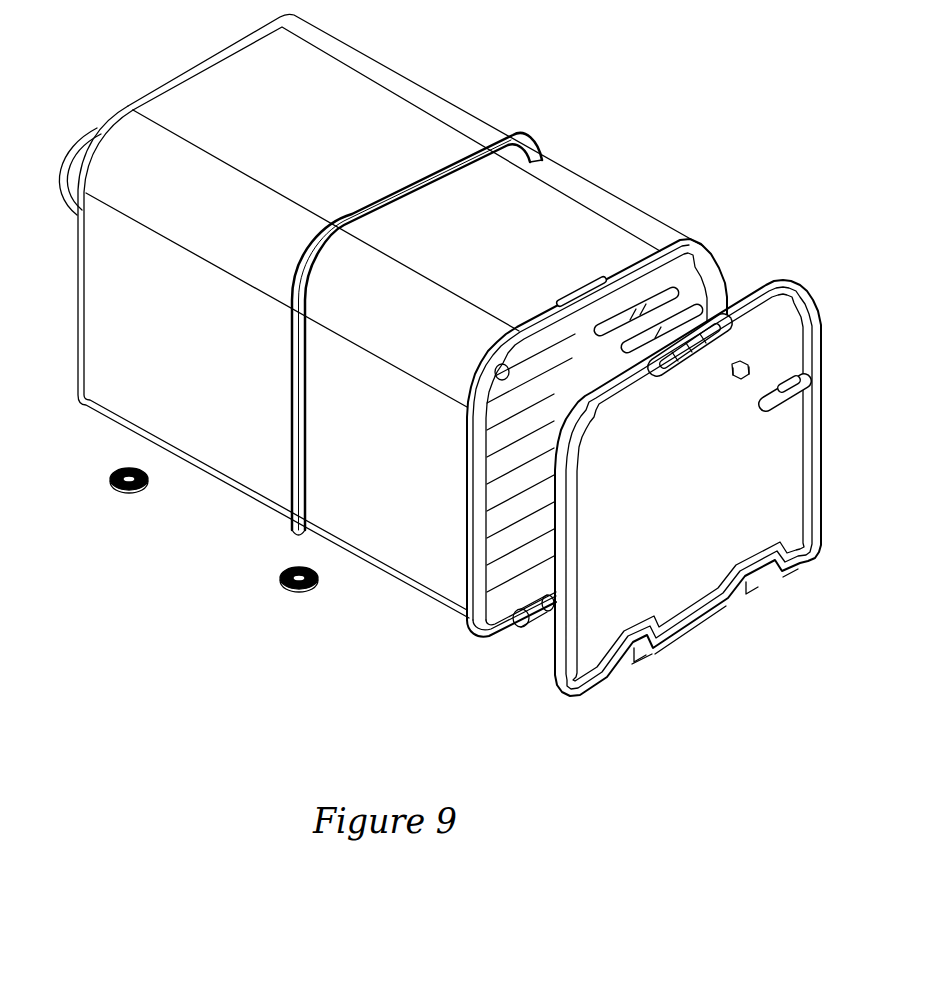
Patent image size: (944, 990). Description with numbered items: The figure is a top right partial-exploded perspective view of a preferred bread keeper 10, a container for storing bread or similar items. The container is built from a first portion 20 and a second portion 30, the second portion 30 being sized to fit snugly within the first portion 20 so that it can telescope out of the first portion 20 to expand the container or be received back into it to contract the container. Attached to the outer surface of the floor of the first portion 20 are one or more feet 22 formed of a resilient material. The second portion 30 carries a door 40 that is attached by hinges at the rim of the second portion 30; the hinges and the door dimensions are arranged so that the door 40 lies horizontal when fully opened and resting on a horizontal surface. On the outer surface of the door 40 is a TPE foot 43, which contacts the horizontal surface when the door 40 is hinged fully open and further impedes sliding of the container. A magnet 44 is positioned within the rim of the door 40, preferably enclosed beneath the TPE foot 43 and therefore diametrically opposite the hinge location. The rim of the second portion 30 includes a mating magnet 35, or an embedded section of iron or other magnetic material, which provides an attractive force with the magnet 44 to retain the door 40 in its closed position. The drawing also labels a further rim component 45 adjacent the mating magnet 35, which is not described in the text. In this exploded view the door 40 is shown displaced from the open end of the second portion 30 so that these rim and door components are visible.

The bread keeper 10 is at (700, 70).
The first portion 20 is at (337, 77).
The feet 22 is at (127, 495).
The second portion 30 is at (560, 193).
The mating magnet 35 is at (600, 273).
The door 40 is at (808, 560).
The TPE foot 43 is at (821, 422).
The magnet 44 is at (741, 362).
The latch 45 is at (722, 300).